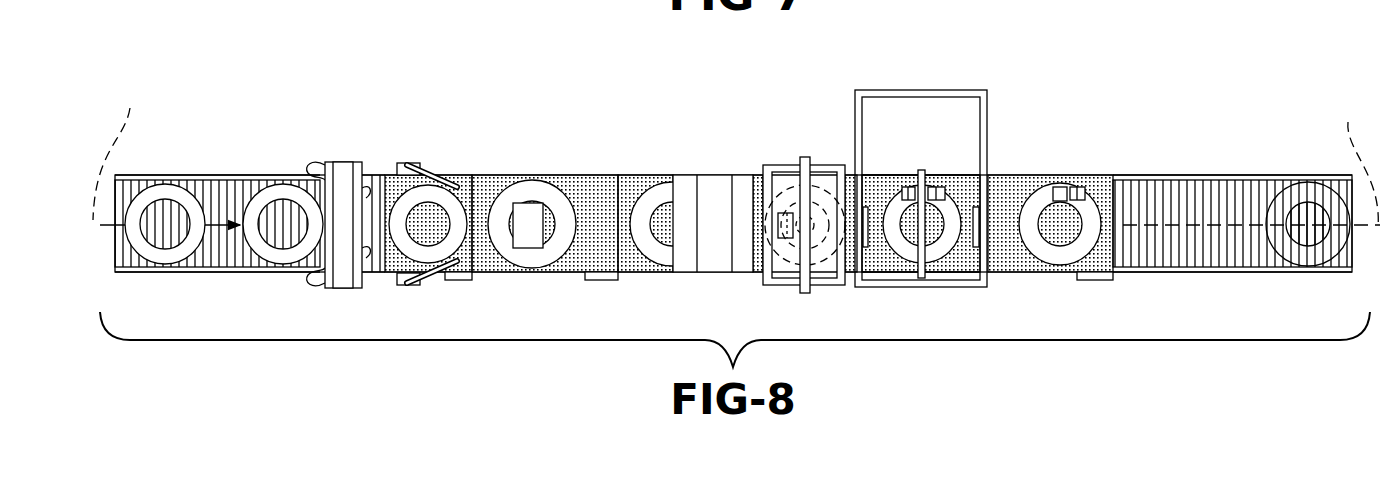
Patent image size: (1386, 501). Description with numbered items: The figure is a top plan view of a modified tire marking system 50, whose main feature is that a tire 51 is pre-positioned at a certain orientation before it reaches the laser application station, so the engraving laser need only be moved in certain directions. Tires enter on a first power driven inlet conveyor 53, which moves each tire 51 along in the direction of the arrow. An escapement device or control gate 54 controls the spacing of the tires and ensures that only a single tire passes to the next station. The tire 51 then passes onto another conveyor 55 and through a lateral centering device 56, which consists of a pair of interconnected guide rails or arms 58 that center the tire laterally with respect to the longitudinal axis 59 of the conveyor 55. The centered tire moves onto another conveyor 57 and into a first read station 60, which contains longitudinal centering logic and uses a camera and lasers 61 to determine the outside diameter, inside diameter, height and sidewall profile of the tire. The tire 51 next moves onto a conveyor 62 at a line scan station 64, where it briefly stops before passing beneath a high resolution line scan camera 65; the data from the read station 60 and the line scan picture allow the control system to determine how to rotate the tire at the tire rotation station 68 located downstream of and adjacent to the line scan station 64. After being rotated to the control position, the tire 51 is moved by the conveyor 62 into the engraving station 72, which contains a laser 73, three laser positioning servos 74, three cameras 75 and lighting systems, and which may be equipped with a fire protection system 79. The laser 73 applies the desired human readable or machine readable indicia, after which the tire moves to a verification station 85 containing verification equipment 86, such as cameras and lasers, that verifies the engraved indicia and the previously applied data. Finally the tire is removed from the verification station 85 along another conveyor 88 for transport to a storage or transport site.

The modified system 50 is at (290, 98).
The tire 51 is at (162, 258).
The first power driven inlet conveyor 53 is at (203, 185).
The control gate 54 is at (344, 158).
The conveyor 55 is at (470, 190).
The lateral centering device 56 is at (401, 162).
The conveyor 57 is at (589, 187).
The guide rails or arms 58 is at (425, 170).
The longitudinal axis 59 is at (735, 154).
The first read station 60 is at (531, 162).
The camera and lasers 61 is at (535, 229).
The conveyor 62 is at (635, 187).
The line scan station 64 is at (712, 160).
The high resolution line scan camera 65 is at (713, 262).
The tire rotation station 68 is at (797, 158).
The engraving station 72 is at (918, 84).
The laser 73 is at (932, 186).
The laser positioning servos 74 is at (945, 187).
The cameras 75 is at (905, 186).
The fire protection system 79 is at (983, 235).
The verification station 85 is at (1048, 170).
The verification equipment 86 is at (1066, 184).
The conveyor 88 is at (1200, 190).